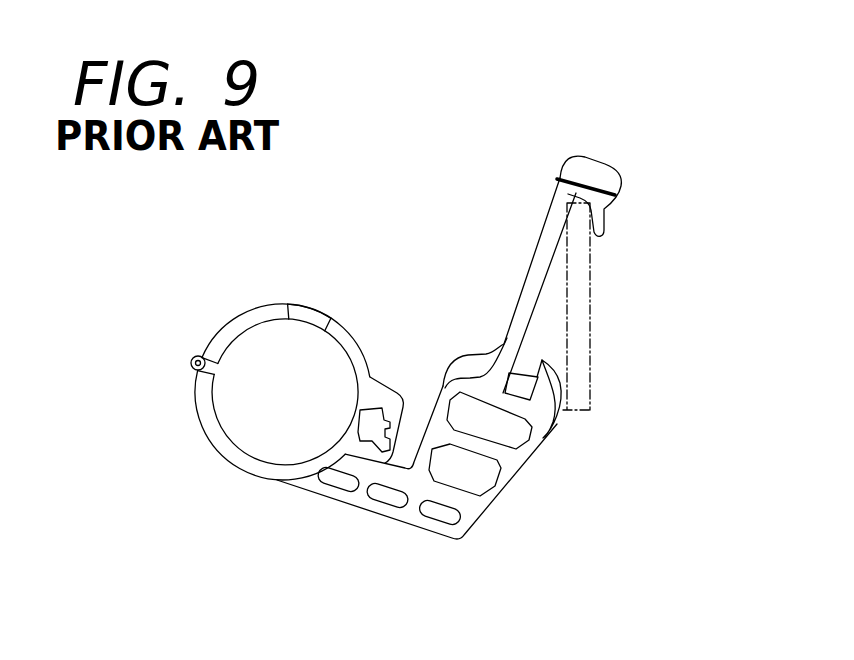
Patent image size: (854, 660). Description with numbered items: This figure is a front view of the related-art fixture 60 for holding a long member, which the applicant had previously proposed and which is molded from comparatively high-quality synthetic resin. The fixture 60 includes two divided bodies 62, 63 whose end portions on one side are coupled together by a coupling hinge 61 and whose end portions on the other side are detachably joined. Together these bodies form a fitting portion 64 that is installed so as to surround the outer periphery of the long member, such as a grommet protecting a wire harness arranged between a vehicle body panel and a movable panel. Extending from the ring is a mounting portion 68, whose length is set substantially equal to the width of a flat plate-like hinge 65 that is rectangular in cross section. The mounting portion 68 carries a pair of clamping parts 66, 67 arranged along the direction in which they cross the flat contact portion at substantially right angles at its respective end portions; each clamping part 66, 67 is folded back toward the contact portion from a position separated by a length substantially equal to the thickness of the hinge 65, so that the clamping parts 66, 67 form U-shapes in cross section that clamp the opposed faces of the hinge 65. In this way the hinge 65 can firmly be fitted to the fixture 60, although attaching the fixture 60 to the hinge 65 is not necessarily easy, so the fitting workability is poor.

The fixture 60 is at (399, 309).
The coupling hinge 61 is at (192, 362).
The divided body 62 is at (307, 305).
The divided body 63 is at (222, 440).
The fitting portion 64 is at (215, 335).
The hinge 65 is at (577, 297).
The clamping part 66 is at (592, 158).
The clamping part 67 is at (518, 392).
The mounting portion 68 is at (529, 267).